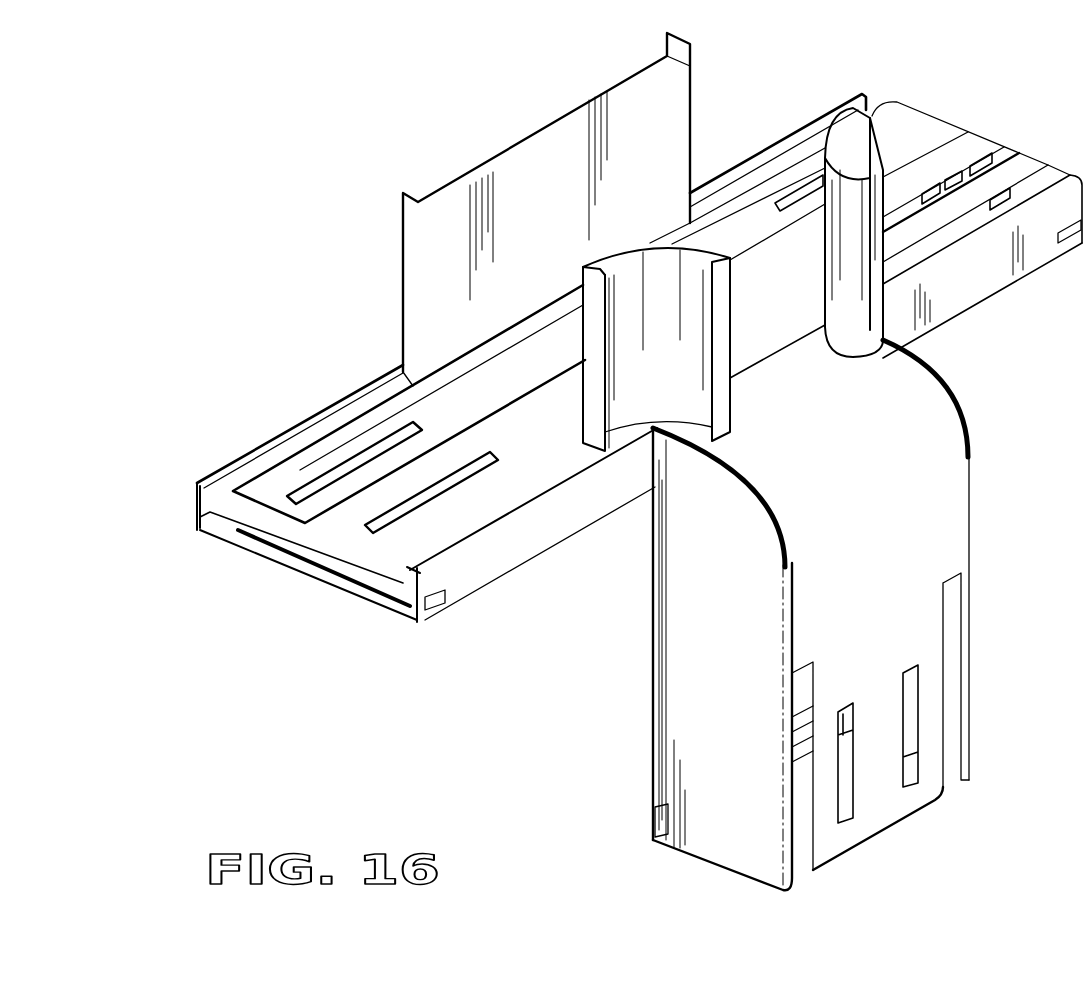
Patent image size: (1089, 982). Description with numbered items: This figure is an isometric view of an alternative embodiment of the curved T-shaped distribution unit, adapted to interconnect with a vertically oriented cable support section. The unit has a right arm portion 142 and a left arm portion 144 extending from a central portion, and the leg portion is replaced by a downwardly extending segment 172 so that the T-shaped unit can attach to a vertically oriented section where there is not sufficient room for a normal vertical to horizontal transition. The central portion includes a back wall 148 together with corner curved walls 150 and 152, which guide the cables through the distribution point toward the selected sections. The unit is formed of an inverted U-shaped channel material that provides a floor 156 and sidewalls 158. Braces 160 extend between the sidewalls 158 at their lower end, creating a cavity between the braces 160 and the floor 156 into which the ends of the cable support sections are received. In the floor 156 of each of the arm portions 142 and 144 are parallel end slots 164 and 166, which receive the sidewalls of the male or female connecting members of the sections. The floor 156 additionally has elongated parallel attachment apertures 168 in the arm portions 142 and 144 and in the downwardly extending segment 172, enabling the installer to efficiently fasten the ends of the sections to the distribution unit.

The right arm portion 142 is at (988, 152).
The left arm portion 144 is at (307, 550).
The back wall 148 is at (566, 245).
The corner curved wall 150 is at (683, 405).
The corner curved wall 152 is at (880, 331).
The floor 156 is at (792, 331).
The sidewalls 158 is at (975, 285).
The brace 160 is at (393, 607).
The end slot 164 is at (317, 430).
The end slot 166 is at (452, 540).
The attachment aperture 168 is at (923, 200).
The downwardly extending segment 172 is at (950, 525).